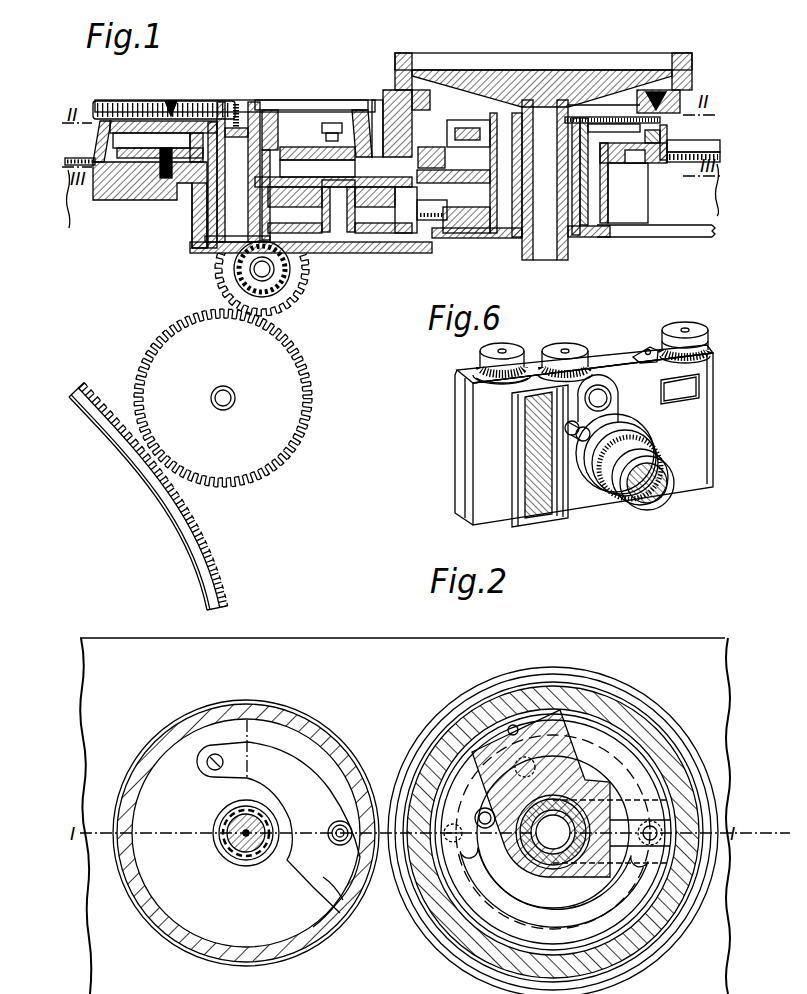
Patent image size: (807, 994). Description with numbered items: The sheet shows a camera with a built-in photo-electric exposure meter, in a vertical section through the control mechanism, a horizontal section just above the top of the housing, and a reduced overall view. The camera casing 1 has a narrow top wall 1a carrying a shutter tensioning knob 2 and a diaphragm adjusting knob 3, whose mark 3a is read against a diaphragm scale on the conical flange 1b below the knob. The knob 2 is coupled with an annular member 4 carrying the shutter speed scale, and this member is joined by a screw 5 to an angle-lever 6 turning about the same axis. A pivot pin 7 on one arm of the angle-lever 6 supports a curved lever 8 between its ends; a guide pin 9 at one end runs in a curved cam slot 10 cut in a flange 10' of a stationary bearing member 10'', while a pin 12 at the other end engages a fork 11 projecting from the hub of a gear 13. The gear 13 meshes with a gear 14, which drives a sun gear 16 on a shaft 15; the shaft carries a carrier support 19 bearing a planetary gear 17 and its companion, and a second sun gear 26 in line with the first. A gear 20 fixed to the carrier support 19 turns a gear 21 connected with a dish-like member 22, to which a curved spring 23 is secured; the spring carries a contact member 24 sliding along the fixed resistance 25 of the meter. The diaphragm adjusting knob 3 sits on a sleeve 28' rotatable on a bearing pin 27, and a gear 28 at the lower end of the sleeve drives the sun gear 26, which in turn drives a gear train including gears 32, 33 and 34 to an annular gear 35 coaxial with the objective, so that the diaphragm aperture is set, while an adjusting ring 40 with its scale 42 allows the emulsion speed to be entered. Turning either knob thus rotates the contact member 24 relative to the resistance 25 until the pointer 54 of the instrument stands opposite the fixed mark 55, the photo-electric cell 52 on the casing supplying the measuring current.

In FIG. 1, the camera casing 1 is at (702, 230).
In FIG. 6, the camera casing 1 is at (698, 434).
In FIG. 1, the narrow top wall 1a is at (88, 160).
In FIG. 6, the narrow top wall 1a is at (713, 352).
In FIG. 2, the narrow top wall 1a is at (340, 645).
In FIG. 1, the conical flange 1b is at (100, 130).
In FIG. 1, the shutter tensioning knob 2 is at (405, 60).
In FIG. 6, the shutter tensioning knob 2 is at (478, 350).
In FIG. 1, the diaphragm adjusting knob 3 is at (145, 108).
In FIG. 6, the diaphragm adjusting knob 3 is at (565, 350).
In FIG. 1, the mark 3a is at (172, 100).
In FIG. 1, the annular member 4 is at (700, 155).
In FIG. 6, the annular member 4 is at (470, 375).
In FIG. 1, the screw 5 is at (612, 90).
In FIG. 1, the angle-lever 6 is at (680, 98).
In FIG. 2, the angle-lever 6 is at (514, 724).
In FIG. 2, the pivot pin 7 is at (518, 762).
In FIG. 1, the curved lever 8 is at (590, 118).
In FIG. 2, the curved lever 8 is at (616, 740).
In FIG. 1, the guide pin 9 is at (470, 142).
In FIG. 2, the guide pin 9 is at (478, 812).
In FIG. 1, the curved cam slot 10 is at (656, 162).
In FIG. 2, the curved cam slot 10 is at (533, 902).
In FIG. 1, the flange 10' is at (648, 188).
In FIG. 1, the stationary bearing member 10'' is at (589, 205).
In FIG. 1, the fork 11 is at (625, 164).
In FIG. 2, the fork 11 is at (668, 862).
In FIG. 1, the pin 12 is at (668, 150).
In FIG. 2, the pin 12 is at (662, 826).
In FIG. 1, the gear 13 is at (606, 200).
In FIG. 1, the gear 14 is at (475, 228).
In FIG. 1, the shaft 15 is at (345, 215).
In FIG. 1, the sun gear 16 is at (385, 212).
In FIG. 1, the planetary gear 17 is at (447, 222).
In FIG. 1, the carrier support 19 is at (422, 225).
In FIG. 1, the gear 20 is at (378, 160).
In FIG. 1, the gear 21 is at (215, 212).
In FIG. 1, the dish-like member 22 is at (106, 150).
In FIG. 2, the dish-like member 22 is at (305, 922).
In FIG. 1, the curved spring 23 is at (268, 128).
In FIG. 2, the curved spring 23 is at (288, 762).
In FIG. 1, the contact member 24 is at (330, 126).
In FIG. 2, the contact member 24 is at (346, 846).
In FIG. 1, the resistance 25 is at (300, 150).
In FIG. 2, the resistance 25 is at (340, 900).
In FIG. 1, the sun gear 26 is at (312, 215).
In FIG. 1, the bearing pin 27 is at (230, 225).
In FIG. 1, the gear 28 is at (215, 218).
In FIG. 1, the sleeve 28' is at (150, 215).
In FIG. 1, the gear 32 is at (280, 282).
In FIG. 1, the gear 33 is at (220, 288).
In FIG. 1, the gear 34 is at (298, 400).
In FIG. 1, the annular gear 35 is at (215, 560).
In FIG. 6, the adjusting ring 40 is at (600, 490).
In FIG. 6, the scale 42 is at (675, 447).
In FIG. 6, the photo-electric cell 52 is at (540, 503).
In FIG. 6, the pointer 54 is at (636, 358).
In FIG. 6, the fixed mark 55 is at (648, 350).